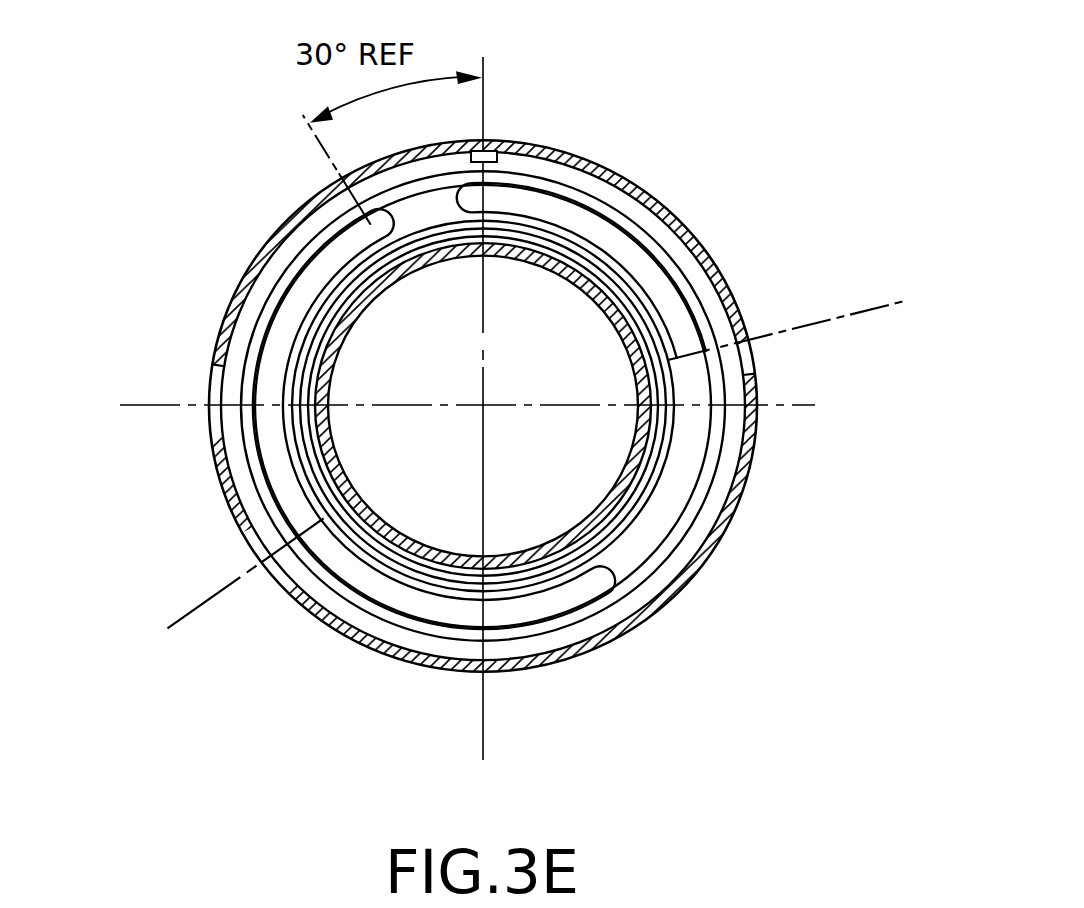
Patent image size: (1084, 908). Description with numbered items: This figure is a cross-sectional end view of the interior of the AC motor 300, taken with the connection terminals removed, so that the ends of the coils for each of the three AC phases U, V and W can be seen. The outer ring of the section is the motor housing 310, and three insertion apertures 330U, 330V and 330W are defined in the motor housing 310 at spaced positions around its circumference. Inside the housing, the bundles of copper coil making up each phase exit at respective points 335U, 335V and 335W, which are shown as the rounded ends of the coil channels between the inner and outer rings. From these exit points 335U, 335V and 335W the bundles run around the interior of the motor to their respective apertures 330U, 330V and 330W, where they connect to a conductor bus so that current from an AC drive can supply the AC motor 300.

The AC motor 300 is at (214, 477).
The motor housing 310 is at (256, 208).
The insertion aperture 330U is at (747, 323).
The insertion aperture 330V is at (262, 580).
The insertion aperture 330W is at (210, 395).
The phase coil exit point 335U is at (497, 180).
The phase coil exit point 335V is at (595, 587).
The phase coil exit point 335W is at (390, 228).